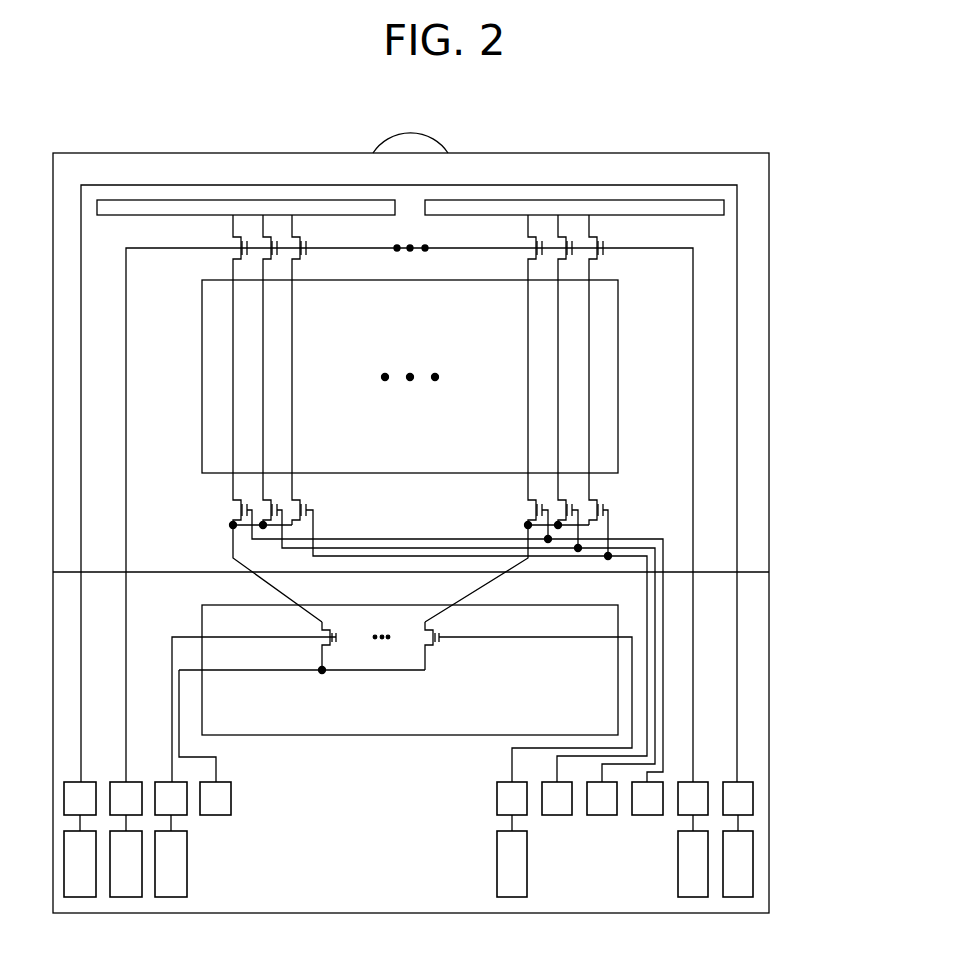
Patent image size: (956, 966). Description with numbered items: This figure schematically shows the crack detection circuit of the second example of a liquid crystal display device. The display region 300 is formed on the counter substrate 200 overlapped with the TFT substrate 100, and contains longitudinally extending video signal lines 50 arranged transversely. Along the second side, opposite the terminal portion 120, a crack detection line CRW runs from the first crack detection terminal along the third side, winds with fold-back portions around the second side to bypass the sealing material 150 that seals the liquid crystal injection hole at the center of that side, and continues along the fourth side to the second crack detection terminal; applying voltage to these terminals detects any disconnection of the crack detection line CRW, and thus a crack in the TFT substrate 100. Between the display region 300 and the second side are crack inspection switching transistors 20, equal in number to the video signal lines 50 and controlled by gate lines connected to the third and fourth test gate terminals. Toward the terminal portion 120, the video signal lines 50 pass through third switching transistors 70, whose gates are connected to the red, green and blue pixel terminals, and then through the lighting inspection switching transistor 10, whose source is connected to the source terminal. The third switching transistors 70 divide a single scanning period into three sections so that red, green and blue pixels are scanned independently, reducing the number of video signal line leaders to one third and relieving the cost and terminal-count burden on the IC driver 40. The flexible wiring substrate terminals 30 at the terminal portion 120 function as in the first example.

The lighting inspection switching transistor 10 is at (432, 650).
The crack inspection switching transistor 20 is at (528, 252).
The flexible wiring substrate terminal 30 is at (187, 858).
The IC driver 40 is at (410, 740).
The video signal line 50 is at (233, 337).
The third switching transistor 70 is at (233, 508).
The TFT substrate 100 is at (746, 153).
The terminal portion 120 is at (755, 700).
The sealing material 150 is at (437, 140).
The counter substrate 200 is at (430, 445).
The display region 300 is at (620, 281).
The crack detection line CRW is at (656, 185).